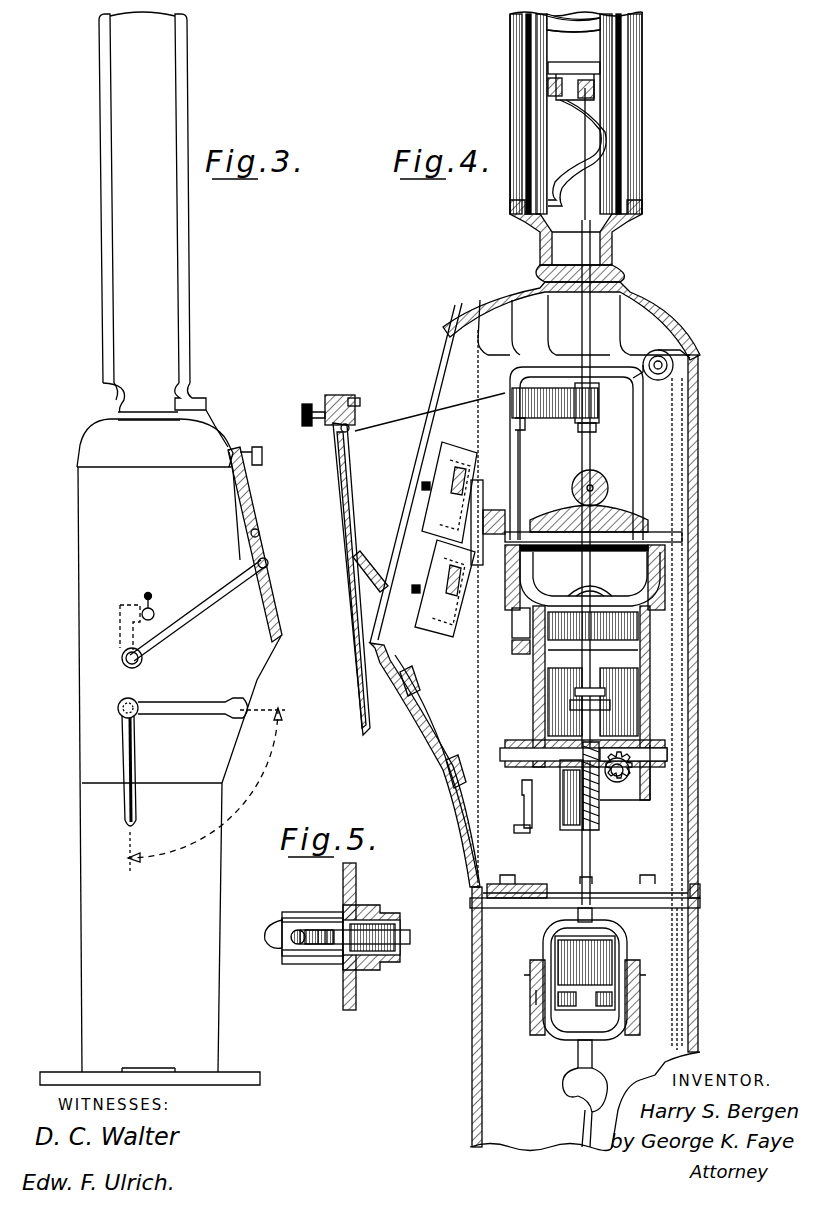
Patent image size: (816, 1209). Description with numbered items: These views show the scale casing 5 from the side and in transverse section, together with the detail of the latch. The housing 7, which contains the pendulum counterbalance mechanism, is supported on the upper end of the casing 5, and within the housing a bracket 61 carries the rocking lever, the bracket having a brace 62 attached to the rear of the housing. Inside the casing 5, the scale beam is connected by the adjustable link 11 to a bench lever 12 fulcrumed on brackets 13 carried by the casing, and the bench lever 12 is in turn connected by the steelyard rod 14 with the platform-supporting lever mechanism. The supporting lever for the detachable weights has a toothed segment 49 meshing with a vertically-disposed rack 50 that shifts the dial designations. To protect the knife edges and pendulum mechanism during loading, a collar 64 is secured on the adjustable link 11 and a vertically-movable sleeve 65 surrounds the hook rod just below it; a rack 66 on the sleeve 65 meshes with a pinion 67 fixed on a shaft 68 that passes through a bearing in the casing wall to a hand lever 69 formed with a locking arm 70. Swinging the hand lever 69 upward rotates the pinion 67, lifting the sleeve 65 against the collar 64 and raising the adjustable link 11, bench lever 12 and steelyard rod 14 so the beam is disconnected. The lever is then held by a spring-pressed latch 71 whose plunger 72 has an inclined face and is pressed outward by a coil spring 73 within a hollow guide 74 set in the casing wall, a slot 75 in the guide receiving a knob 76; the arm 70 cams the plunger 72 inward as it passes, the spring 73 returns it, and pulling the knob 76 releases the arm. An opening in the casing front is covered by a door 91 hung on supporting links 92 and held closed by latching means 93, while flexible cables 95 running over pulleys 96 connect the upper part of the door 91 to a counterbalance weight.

In FIG. 3, the casing 5 is at (84, 672).
In FIG. 4, the casing 5 is at (452, 326).
In FIG. 5, the casing 5 is at (358, 1002).
In FIG. 3, the housing 7 is at (110, 400).
In FIG. 4, the housing 7 is at (540, 222).
In FIG. 4, the adjustable link 11 is at (596, 620).
In FIG. 4, the bench lever 12 is at (598, 1006).
In FIG. 4, the brackets 13 is at (540, 1036).
In FIG. 4, the steelyard rod 14 is at (580, 1112).
In FIG. 4, the toothed segment 49 is at (515, 808).
In FIG. 4, the rack 50 is at (526, 834).
In FIG. 4, the bracket 61 is at (570, 154).
In FIG. 4, the brace 62 is at (577, 113).
In FIG. 4, the collar 64 is at (533, 703).
In FIG. 4, the sleeve 65 is at (590, 826).
In FIG. 4, the rack 66 is at (602, 812).
In FIG. 4, the pinion 67 is at (650, 780).
In FIG. 4, the shaft 68 is at (635, 768).
In FIG. 3, the hand lever 69 is at (123, 808).
In FIG. 3, the locking arm 70 is at (160, 706).
In FIG. 3, the spring-pressed latch 71 is at (152, 606).
In FIG. 5, the plunger 72 is at (282, 924).
In FIG. 5, the coil spring 73 is at (402, 947).
In FIG. 5, the hollow guide 74 is at (334, 960).
In FIG. 5, the slot 75 is at (310, 946).
In FIG. 3, the knob 76 is at (144, 596).
In FIG. 5, the knob 76 is at (300, 930).
In FIG. 4, the door 91 is at (352, 700).
In FIG. 3, the supporting links 92 is at (212, 588).
In FIG. 4, the supporting links 92 is at (370, 560).
In FIG. 4, the latching means 93 is at (355, 405).
In FIG. 4, the flexible cables 95 is at (676, 1012).
In FIG. 4, the pulleys 96 is at (658, 350).